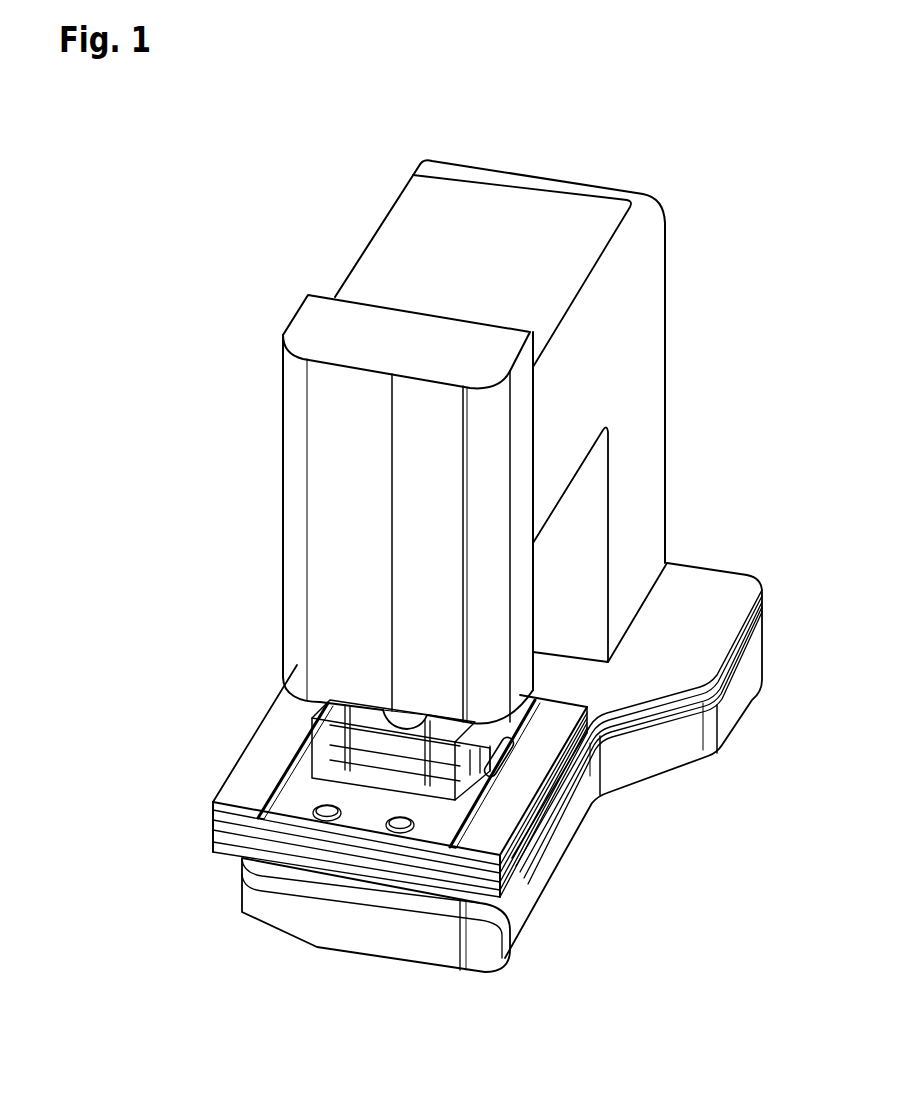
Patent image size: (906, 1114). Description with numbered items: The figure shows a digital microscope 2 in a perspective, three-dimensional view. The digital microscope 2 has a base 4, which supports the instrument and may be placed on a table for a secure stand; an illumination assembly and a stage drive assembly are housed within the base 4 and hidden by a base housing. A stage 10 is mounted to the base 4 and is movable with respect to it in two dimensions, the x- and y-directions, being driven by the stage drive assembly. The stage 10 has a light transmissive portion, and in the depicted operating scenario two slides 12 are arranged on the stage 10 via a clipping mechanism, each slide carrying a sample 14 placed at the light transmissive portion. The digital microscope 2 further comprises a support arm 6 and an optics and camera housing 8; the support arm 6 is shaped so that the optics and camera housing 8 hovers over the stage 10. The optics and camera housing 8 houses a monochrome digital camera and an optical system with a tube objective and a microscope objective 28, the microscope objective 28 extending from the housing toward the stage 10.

The digital microscope 2 is at (684, 141).
The base 4 is at (655, 765).
The support arm 6 is at (650, 281).
The optics and camera housing 8 is at (318, 428).
The stage 10 is at (250, 765).
The slides 12 is at (367, 733).
The sample 14 is at (463, 828).
The microscope objective 28 is at (284, 680).